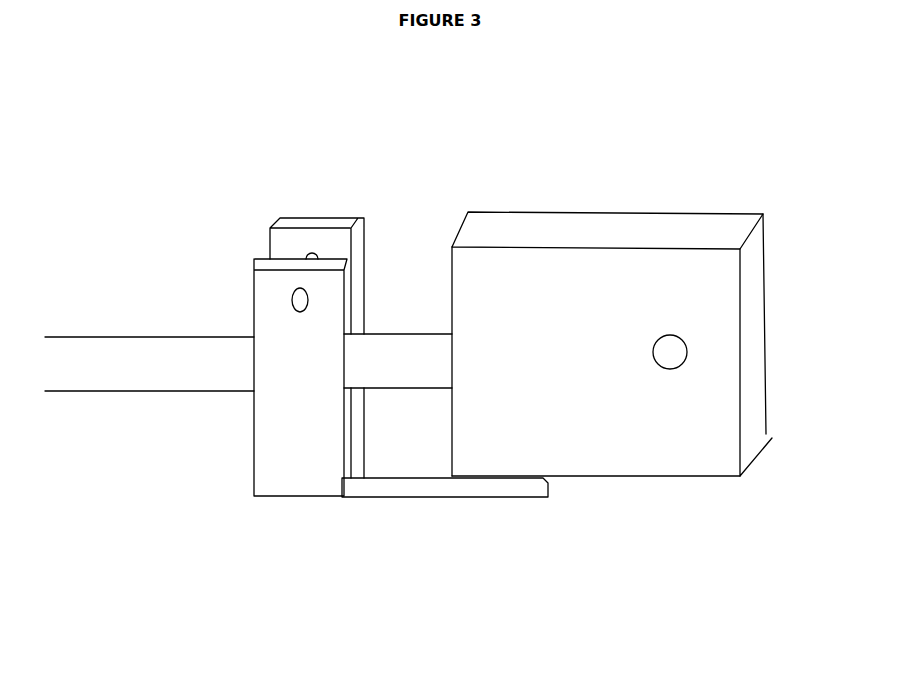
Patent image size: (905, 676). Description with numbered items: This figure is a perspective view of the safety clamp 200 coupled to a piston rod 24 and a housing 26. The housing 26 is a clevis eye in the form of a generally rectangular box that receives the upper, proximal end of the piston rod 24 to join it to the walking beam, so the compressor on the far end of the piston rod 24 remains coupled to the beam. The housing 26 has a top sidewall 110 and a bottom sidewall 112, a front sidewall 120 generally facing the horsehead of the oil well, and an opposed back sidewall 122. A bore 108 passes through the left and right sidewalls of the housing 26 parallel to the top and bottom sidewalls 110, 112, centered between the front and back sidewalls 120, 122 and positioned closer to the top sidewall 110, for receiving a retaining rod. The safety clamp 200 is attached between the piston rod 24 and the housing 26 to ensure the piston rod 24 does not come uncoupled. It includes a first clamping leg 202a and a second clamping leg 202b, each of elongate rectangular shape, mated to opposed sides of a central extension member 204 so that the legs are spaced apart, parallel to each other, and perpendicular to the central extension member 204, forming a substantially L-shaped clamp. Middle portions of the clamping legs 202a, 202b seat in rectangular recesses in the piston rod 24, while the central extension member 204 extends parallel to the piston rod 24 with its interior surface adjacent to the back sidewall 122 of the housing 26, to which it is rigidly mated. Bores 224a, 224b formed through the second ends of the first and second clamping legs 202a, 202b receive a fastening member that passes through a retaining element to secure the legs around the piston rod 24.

The piston rod 24 is at (86, 357).
The housing 26 is at (621, 352).
The bore 108 is at (669, 358).
The top sidewall 110 is at (757, 355).
The bottom sidewall 112 is at (452, 272).
The front sidewall 120 is at (533, 230).
The back sidewall 122 is at (566, 478).
The safety clamp 200 is at (332, 328).
The first clamping leg 202a is at (297, 232).
The second clamping leg 202b is at (267, 298).
The central extension member 204 is at (392, 490).
The bore 224a is at (313, 252).
The bore 224b is at (296, 308).